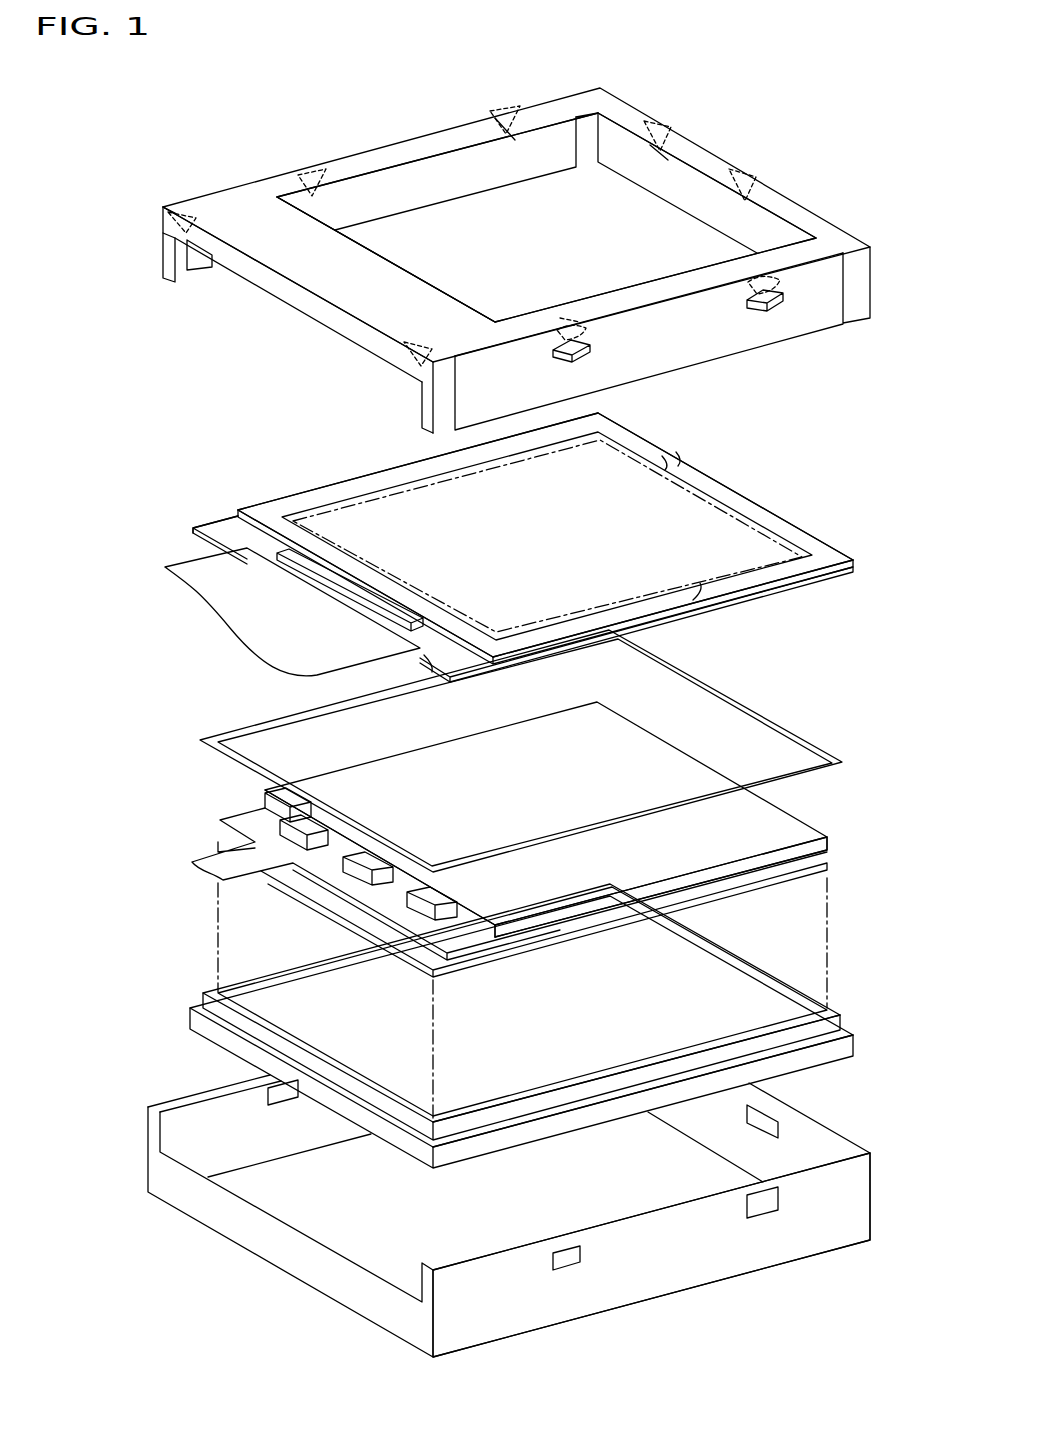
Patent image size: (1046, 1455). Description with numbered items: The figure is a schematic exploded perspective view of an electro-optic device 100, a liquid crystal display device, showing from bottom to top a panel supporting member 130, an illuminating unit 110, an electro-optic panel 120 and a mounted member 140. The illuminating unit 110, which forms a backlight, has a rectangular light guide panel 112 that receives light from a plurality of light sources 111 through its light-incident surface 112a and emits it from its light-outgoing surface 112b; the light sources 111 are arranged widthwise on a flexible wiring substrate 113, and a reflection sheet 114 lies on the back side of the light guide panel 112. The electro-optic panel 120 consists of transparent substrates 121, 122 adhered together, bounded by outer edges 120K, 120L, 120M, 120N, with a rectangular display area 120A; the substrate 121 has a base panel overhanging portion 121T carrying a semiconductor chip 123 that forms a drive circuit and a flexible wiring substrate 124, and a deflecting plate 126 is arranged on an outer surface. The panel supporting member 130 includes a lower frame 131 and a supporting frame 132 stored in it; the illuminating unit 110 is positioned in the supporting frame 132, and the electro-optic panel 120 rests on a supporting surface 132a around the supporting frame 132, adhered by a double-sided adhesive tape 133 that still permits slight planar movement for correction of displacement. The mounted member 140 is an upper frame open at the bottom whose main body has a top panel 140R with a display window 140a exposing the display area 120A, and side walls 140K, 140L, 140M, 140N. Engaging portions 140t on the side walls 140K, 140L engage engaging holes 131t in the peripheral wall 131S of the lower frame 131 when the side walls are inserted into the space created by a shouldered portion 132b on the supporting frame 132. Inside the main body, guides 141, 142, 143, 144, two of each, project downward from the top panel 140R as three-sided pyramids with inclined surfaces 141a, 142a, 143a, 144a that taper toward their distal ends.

The electro-optic device 100 is at (246, 52).
The illuminating unit 110 is at (503, 836).
The light source 111 is at (358, 873).
The light guide panel 112 is at (348, 785).
The light-incident surface 112a is at (480, 923).
The light-outgoing surface 112b is at (555, 890).
The wiring substrate 113 is at (367, 917).
The reflection sheet 114 is at (767, 885).
The electro-optic panel 120 is at (501, 544).
The display area 120A is at (378, 496).
The outer edge 120K is at (700, 590).
The outer edge 120L is at (475, 440).
The outer edge 120M is at (737, 493).
The outer edge 120N is at (430, 660).
The substrate 121 is at (813, 587).
The base panel overhanging portion 121T is at (222, 532).
The substrate 122 is at (792, 533).
The semiconductor chip 123 is at (343, 585).
The wiring substrate 124 is at (245, 612).
The deflecting plate 126 is at (668, 465).
The panel supporting member 130 is at (491, 1120).
The lower frame 131 is at (292, 1268).
The peripheral wall 131S is at (738, 1250).
The engaging hole 131t is at (590, 1255).
The supporting frame 132 is at (387, 1145).
The supporting surface 132a is at (568, 1085).
The shouldered portion 132b is at (598, 1098).
The double-sided adhesive tape 133 is at (247, 725).
The mounted member 140 is at (285, 173).
The side wall 140K is at (733, 337).
The side wall 140L is at (543, 148).
The side wall 140M is at (670, 180).
The side wall 140N is at (280, 287).
The top panel 140R is at (338, 290).
The display window 140a is at (425, 275).
The engaging portion 140t is at (553, 347).
The guide 141 is at (580, 334).
The inclined surface 141a is at (568, 326).
The guide 142 is at (311, 172).
The inclined surface 142a is at (507, 134).
The guide 143 is at (662, 125).
The inclined surface 143a is at (660, 156).
The guide 144 is at (172, 233).
The inclined surface 144a is at (187, 250).